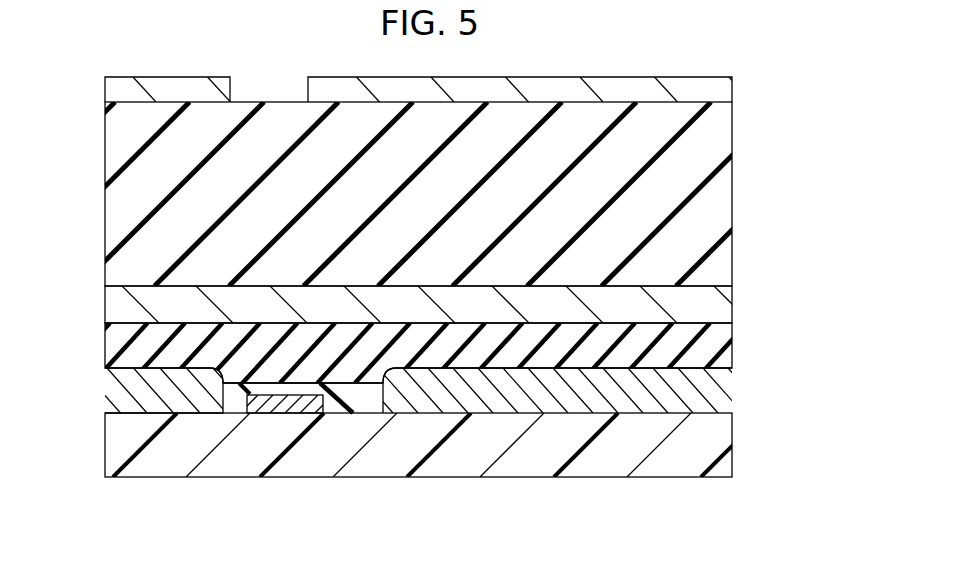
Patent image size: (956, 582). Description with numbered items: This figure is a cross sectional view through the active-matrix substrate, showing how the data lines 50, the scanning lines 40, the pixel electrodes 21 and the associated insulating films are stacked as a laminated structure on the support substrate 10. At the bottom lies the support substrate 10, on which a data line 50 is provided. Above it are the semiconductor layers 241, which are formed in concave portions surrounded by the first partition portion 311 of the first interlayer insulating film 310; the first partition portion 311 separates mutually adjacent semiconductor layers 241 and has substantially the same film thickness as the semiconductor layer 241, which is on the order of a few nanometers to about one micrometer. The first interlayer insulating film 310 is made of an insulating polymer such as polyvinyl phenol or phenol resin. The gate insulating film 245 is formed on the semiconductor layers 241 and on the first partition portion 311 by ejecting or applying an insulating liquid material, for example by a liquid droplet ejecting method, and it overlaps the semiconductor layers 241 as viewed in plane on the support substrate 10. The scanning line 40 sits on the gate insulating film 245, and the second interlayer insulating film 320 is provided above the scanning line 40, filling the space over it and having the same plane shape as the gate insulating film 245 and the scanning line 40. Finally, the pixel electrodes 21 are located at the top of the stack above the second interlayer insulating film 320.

The pixel electrode 21 is at (153, 83).
The second interlayer insulating film 320 is at (722, 198).
The scanning line 40 is at (722, 303).
The gate insulating film 245 is at (722, 352).
The semiconductor layer 241 is at (125, 390).
The first interlayer insulating film 310 is at (322, 468).
The first partition portion 311 is at (368, 395).
The data line 50 is at (278, 403).
The support substrate 10 is at (720, 432).